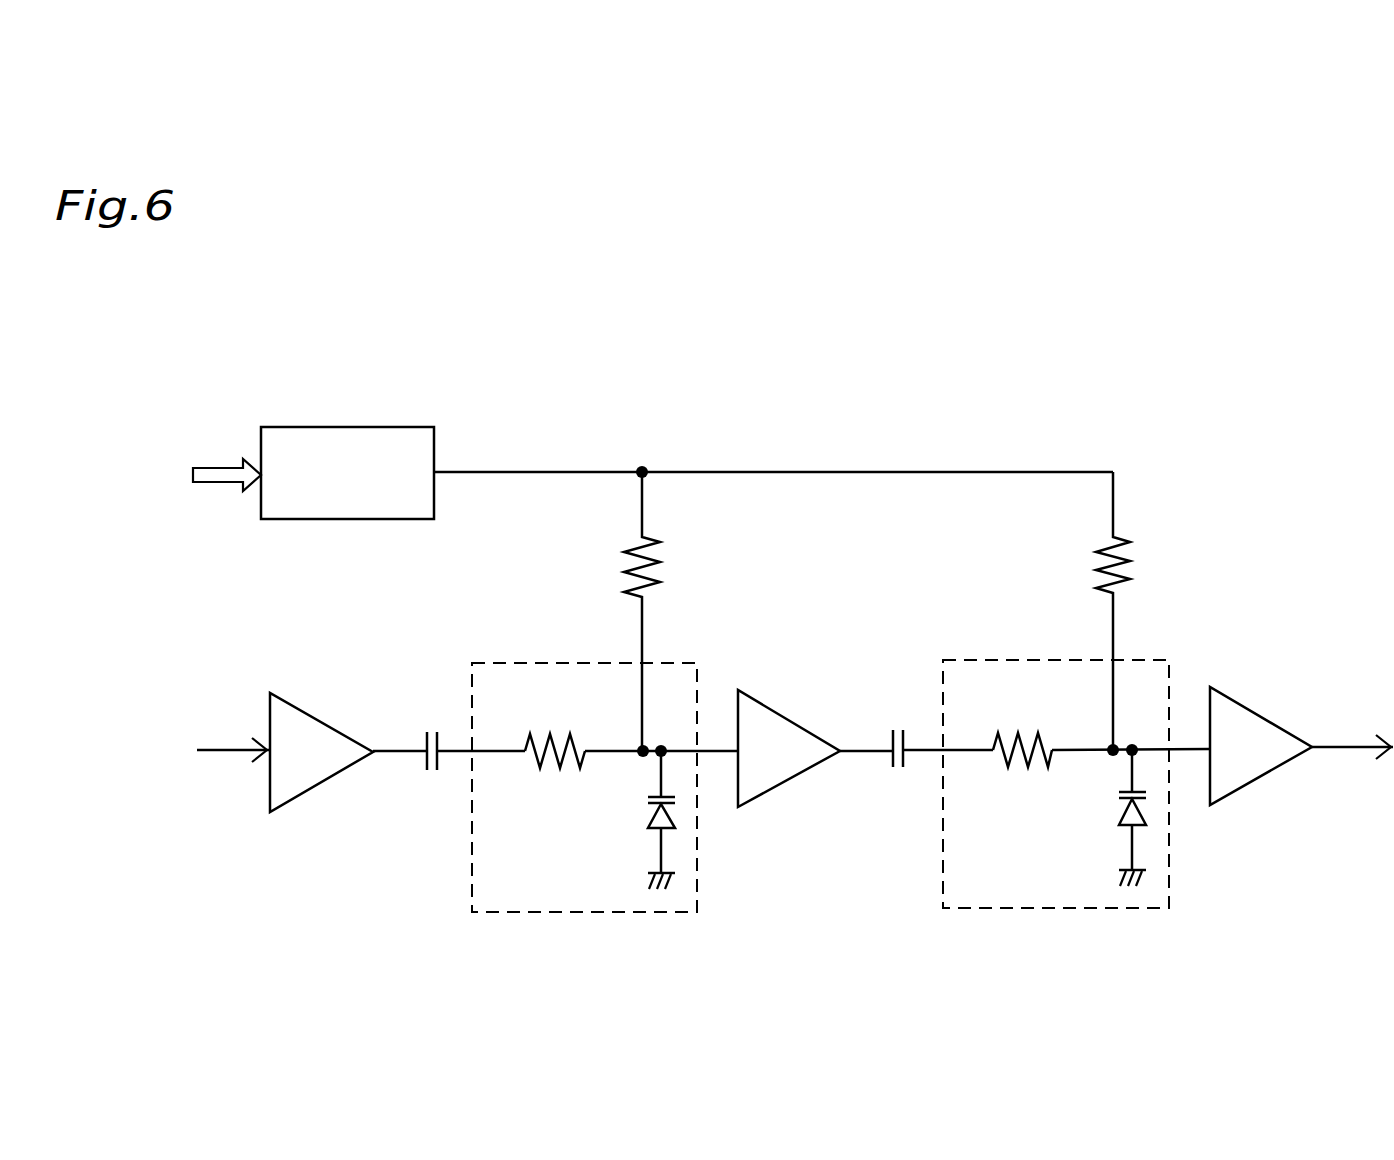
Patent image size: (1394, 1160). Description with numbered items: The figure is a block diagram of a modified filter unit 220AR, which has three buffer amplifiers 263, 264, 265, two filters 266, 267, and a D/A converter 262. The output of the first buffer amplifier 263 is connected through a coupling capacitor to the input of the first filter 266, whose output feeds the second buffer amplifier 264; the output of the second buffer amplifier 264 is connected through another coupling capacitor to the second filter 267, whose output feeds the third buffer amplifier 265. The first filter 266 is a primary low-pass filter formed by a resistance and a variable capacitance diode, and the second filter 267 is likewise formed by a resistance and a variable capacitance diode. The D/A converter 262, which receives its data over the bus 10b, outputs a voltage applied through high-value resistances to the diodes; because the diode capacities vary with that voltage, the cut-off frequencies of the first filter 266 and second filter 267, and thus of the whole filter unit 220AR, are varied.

The modified filter unit 220AR is at (294, 298).
The bus 10b is at (222, 467).
The D/A converter 262 is at (349, 427).
The first buffer amplifier 263 is at (298, 706).
The second buffer amplifier 264 is at (766, 700).
The third buffer amplifier 265 is at (1235, 697).
The first filter 266 is at (539, 662).
The second filter 267 is at (1003, 660).